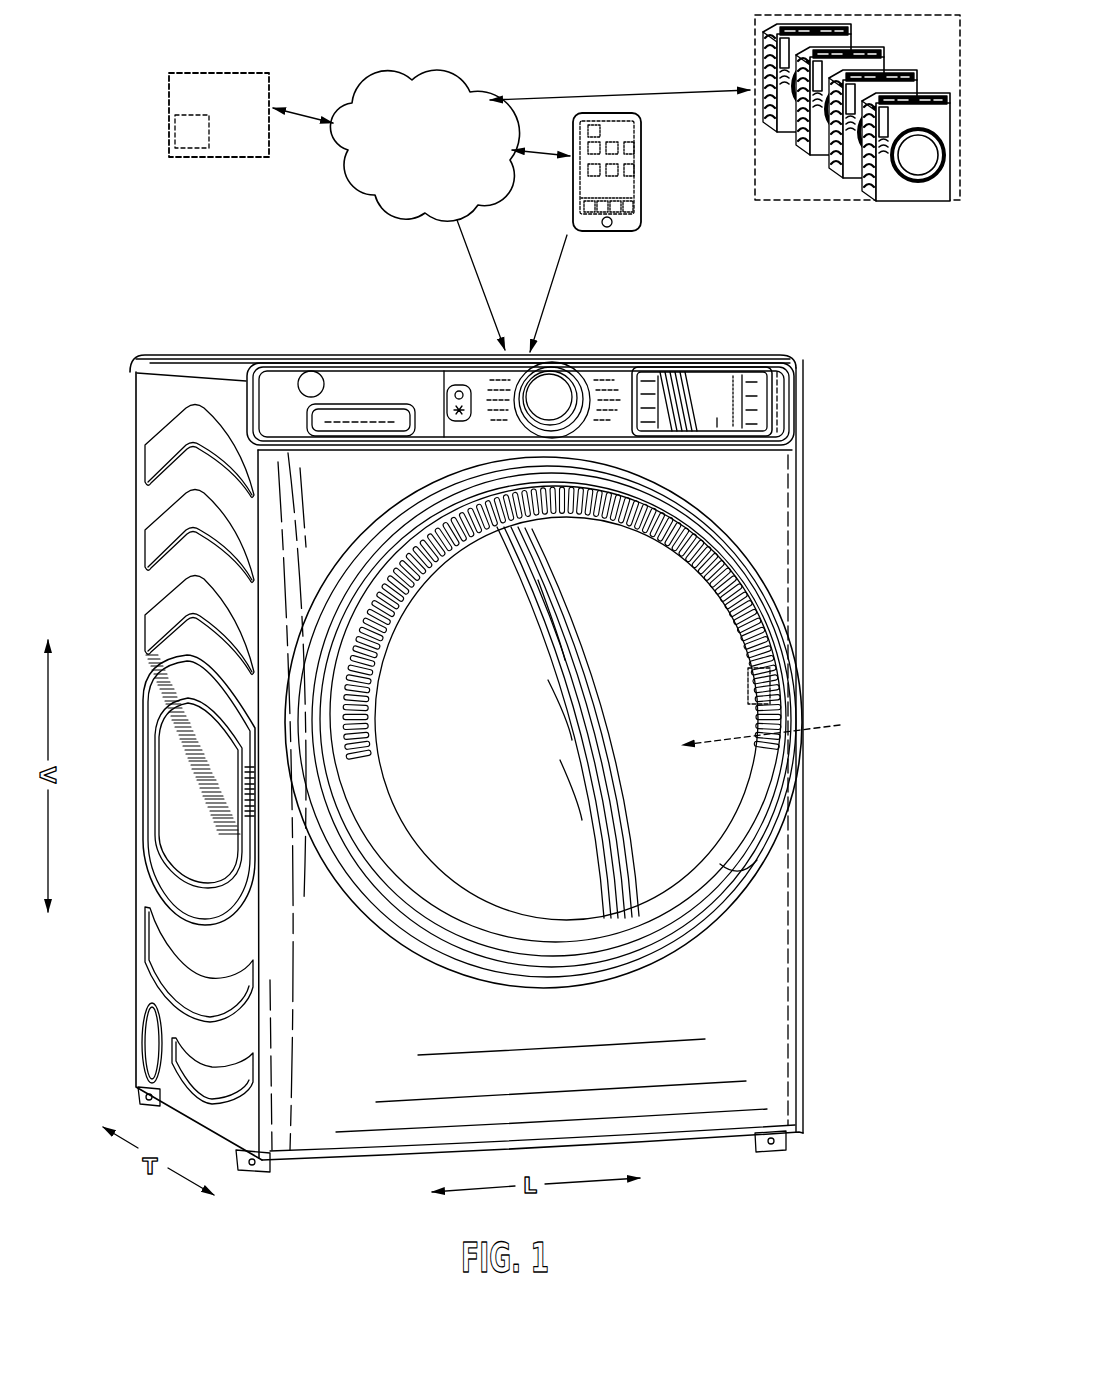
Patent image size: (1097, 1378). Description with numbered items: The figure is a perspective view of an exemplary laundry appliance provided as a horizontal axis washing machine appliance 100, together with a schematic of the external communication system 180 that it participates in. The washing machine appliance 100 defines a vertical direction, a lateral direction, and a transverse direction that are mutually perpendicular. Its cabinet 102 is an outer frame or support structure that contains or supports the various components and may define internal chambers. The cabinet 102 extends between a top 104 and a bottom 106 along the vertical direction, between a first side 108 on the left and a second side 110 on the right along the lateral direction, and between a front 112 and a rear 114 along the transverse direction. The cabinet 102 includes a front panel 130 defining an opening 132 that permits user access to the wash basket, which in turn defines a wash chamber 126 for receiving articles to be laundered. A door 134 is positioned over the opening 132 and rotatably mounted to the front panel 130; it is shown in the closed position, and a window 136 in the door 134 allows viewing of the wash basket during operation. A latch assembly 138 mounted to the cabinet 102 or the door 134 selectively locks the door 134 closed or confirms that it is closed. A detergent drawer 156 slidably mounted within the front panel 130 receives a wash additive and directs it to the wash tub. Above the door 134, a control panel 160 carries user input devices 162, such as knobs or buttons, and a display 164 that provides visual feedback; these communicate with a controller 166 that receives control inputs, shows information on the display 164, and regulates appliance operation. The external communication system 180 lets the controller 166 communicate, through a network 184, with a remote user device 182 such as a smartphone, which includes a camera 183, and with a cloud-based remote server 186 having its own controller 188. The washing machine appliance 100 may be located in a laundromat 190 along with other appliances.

The washing machine appliance 100 is at (778, 286).
The cabinet 102 is at (140, 583).
The top 104 is at (128, 350).
The bottom 106 is at (808, 1118).
The first side 108 is at (175, 936).
The second side 110 is at (800, 962).
The front 112 is at (746, 1023).
The rear 114 is at (136, 528).
The wash chamber 126 is at (781, 728).
The front panel 130 is at (792, 549).
The opening 132 is at (747, 548).
The door 134 is at (750, 808).
The window 136 is at (718, 870).
The latch assembly 138 is at (796, 690).
The detergent drawer 156 is at (375, 386).
The control panel 160 is at (650, 360).
The user input devices 162 is at (456, 386).
The display 164 is at (701, 386).
The controller 166 is at (790, 381).
The external communication system 180 is at (565, 78).
The remote user device 182 is at (641, 178).
The camera 183 is at (588, 130).
The network 184 is at (392, 157).
The remote server 186 is at (224, 107).
The controller 188 is at (190, 150).
The laundromat 190 is at (755, 60).